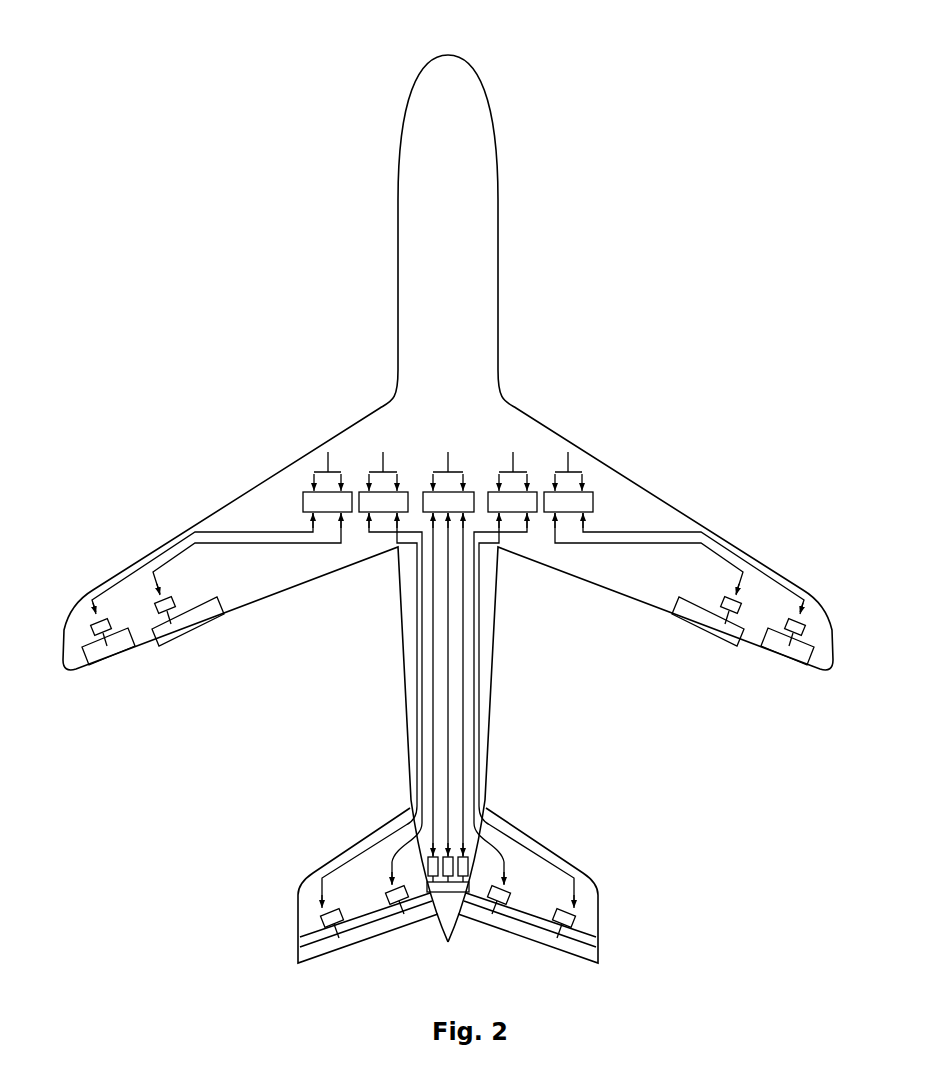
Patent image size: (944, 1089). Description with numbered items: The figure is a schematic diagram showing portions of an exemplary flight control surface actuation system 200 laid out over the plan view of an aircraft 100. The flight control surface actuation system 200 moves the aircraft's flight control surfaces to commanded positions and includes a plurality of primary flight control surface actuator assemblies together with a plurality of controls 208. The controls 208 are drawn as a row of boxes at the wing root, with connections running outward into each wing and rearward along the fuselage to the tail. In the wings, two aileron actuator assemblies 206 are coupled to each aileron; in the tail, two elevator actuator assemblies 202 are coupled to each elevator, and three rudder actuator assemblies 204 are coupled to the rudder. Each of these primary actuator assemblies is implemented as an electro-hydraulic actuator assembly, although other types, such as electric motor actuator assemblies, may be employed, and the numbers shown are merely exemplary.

The aircraft 100 is at (475, 80).
The flight control surface actuation system 200 is at (612, 290).
The elevator actuator assemblies 202 is at (323, 918).
The rudder actuator assemblies 204 is at (428, 858).
The aileron actuator assemblies 206 is at (112, 626).
The controls 208 is at (423, 492).